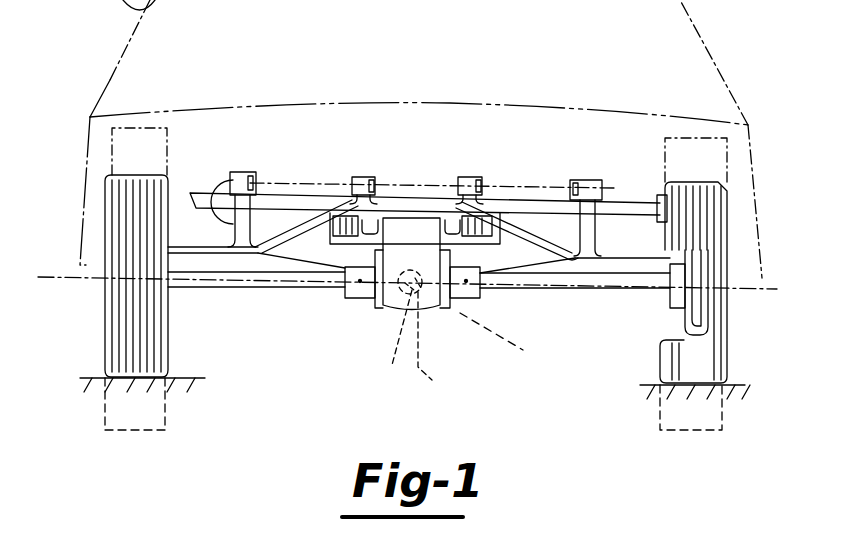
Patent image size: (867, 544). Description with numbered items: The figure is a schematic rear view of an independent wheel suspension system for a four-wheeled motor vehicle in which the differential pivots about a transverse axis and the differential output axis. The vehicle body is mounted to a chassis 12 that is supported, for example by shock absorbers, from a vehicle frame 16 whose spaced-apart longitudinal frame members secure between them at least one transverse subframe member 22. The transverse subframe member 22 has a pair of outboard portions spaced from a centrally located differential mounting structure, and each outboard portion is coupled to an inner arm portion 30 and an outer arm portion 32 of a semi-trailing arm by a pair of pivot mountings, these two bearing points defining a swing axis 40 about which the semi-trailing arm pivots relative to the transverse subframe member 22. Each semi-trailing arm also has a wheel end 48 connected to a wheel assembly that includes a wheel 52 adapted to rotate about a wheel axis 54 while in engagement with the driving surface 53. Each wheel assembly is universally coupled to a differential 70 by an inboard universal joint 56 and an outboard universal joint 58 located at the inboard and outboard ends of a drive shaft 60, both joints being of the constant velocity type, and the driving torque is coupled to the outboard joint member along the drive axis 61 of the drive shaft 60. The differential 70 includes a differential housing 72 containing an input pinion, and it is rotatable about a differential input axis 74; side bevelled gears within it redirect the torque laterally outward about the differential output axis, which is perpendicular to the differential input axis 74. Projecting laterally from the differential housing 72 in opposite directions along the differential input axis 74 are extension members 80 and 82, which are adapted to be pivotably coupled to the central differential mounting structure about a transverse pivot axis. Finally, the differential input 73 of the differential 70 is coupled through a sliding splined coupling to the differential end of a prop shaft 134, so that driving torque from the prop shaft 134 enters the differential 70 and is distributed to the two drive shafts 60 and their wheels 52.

The chassis 12 is at (612, 170).
The vehicle frame 16 is at (442, 172).
The transverse subframe member 22 is at (400, 200).
The inner arm portion 30 is at (286, 223).
The outer arm portion 32 is at (212, 193).
The swing axis 40 is at (356, 176).
The wheel end 48 is at (210, 242).
The wheel 52 is at (716, 368).
The driving surface 53 is at (83, 377).
The wheel axis 54 is at (757, 290).
The inboard universal joint 56 is at (360, 298).
The outboard universal joint 58 is at (683, 331).
The drive shaft 60 is at (263, 288).
The drive axis 61 is at (300, 268).
The differential 70 is at (428, 310).
The differential housing 72 is at (428, 315).
The differential input 73 is at (428, 332).
The differential input axis 74 is at (505, 339).
The extension member 80 is at (284, 242).
The extension member 82 is at (496, 244).
The prop shaft 134 is at (393, 333).